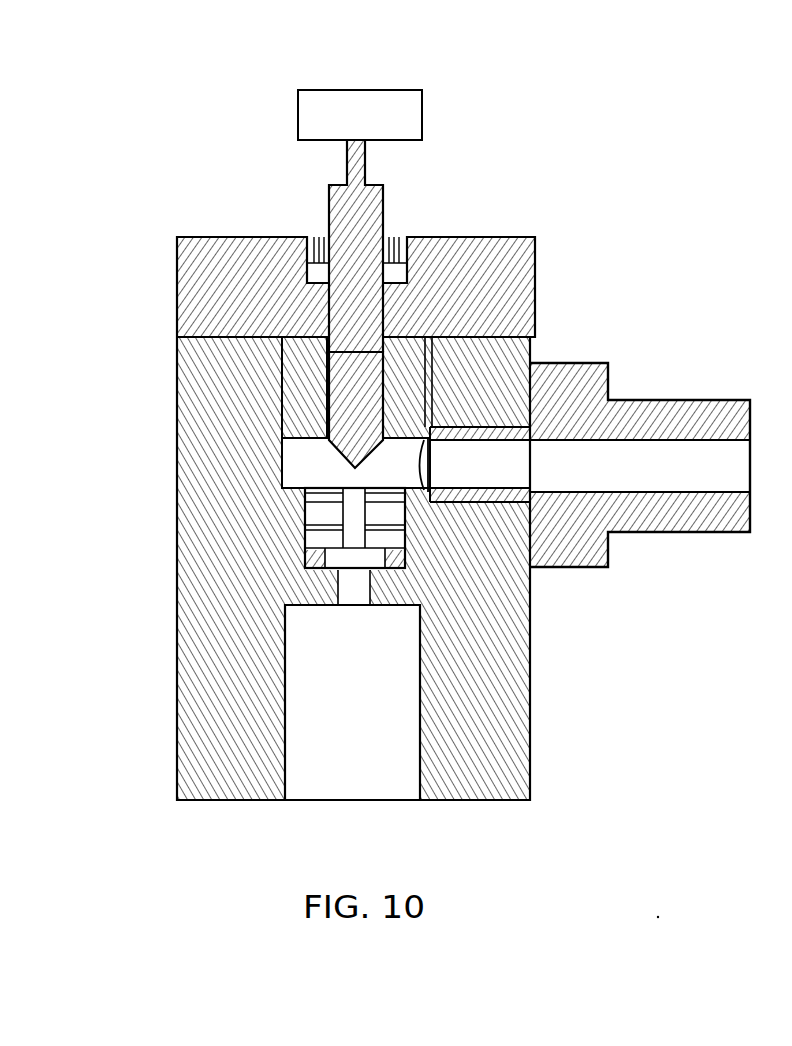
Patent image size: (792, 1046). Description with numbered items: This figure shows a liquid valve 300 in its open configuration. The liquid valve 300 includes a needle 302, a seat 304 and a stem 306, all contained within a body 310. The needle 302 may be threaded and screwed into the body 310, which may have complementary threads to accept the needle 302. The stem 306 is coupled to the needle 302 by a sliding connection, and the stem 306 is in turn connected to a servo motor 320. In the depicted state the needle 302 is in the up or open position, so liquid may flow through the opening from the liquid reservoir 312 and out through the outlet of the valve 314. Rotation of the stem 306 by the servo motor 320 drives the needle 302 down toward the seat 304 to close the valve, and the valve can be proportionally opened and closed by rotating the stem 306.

The liquid valve 300 is at (166, 216).
The needle 302 is at (336, 427).
The seat 304 is at (318, 518).
The stem 306 is at (350, 169).
The body 310 is at (567, 310).
The liquid reservoir 312 is at (568, 478).
The outlet of the valve 314 is at (338, 733).
The servo motor 320 is at (338, 128).